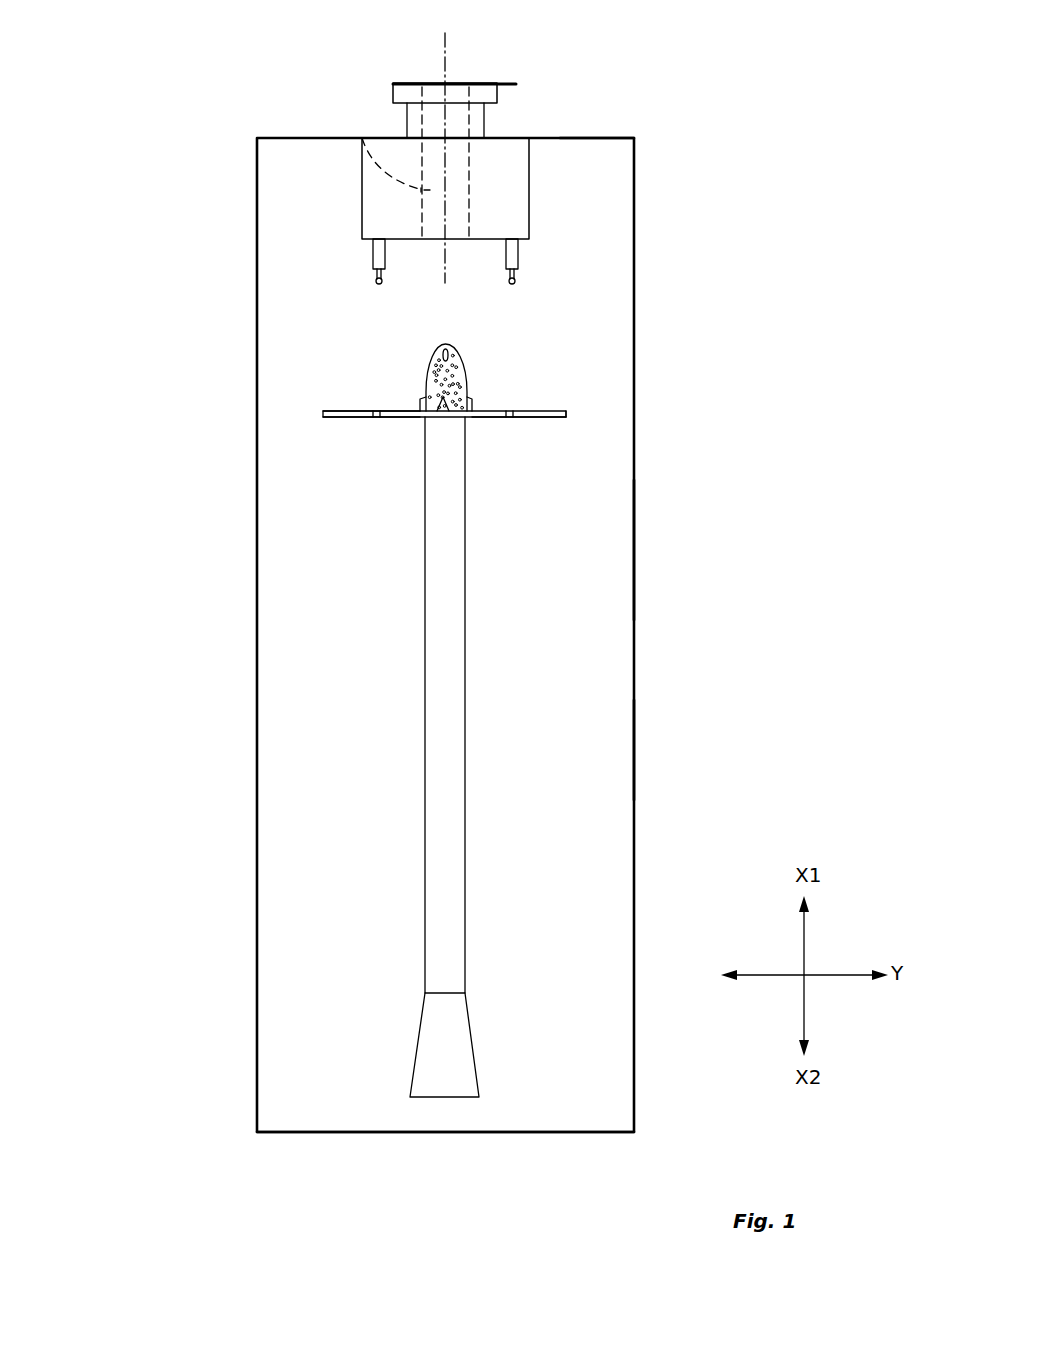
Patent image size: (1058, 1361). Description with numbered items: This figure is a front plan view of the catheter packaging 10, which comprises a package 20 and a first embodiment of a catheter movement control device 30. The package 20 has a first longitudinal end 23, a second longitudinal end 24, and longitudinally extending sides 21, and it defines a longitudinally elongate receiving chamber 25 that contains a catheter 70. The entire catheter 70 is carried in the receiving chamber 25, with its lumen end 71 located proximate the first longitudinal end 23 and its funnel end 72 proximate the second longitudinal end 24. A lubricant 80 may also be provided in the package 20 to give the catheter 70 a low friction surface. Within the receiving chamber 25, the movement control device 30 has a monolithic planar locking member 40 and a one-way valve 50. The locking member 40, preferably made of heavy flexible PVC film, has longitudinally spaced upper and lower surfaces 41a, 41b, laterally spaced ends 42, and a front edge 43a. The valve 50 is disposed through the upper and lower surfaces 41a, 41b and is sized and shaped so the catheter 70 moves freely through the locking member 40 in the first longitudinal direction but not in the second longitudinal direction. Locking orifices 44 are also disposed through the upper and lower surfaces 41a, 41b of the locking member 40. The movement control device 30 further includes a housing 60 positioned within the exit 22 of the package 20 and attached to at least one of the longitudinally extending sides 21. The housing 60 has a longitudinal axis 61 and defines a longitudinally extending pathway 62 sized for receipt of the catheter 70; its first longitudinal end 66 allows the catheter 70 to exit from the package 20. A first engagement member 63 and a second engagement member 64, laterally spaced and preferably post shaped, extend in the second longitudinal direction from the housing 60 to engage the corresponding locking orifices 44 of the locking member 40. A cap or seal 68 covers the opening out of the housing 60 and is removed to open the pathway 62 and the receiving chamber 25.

The catheter packaging 10 is at (148, 134).
The package 20 is at (257, 392).
The longitudinally extending side 21 is at (635, 547).
The exit 22 is at (390, 136).
The first longitudinal end 23 is at (603, 137).
The second longitudinal end 24 is at (317, 1133).
The receiving chamber 25 is at (610, 745).
The movement control device 30 is at (322, 382).
The monolithic planar locking member 40 is at (559, 401).
The upper surface 41a is at (340, 410).
The lower surface 41b is at (333, 420).
The lateral end 42 is at (567, 417).
The front edge 43a is at (485, 418).
The locking orifice 44 is at (378, 417).
The valve 50 is at (443, 414).
The housing 60 is at (513, 153).
The longitudinal axis 61 is at (445, 52).
The pathway 62 is at (340, 123).
The first longitudinally extending engagement member 63 is at (518, 260).
The second longitudinally extending engagement member 64 is at (373, 262).
The first longitudinal end 66 is at (398, 92).
The cap or seal 68 is at (487, 82).
The catheter 70 is at (425, 803).
The lumen end 71 is at (442, 357).
The funnel end 72 is at (468, 1063).
The lubricant 80 is at (428, 358).